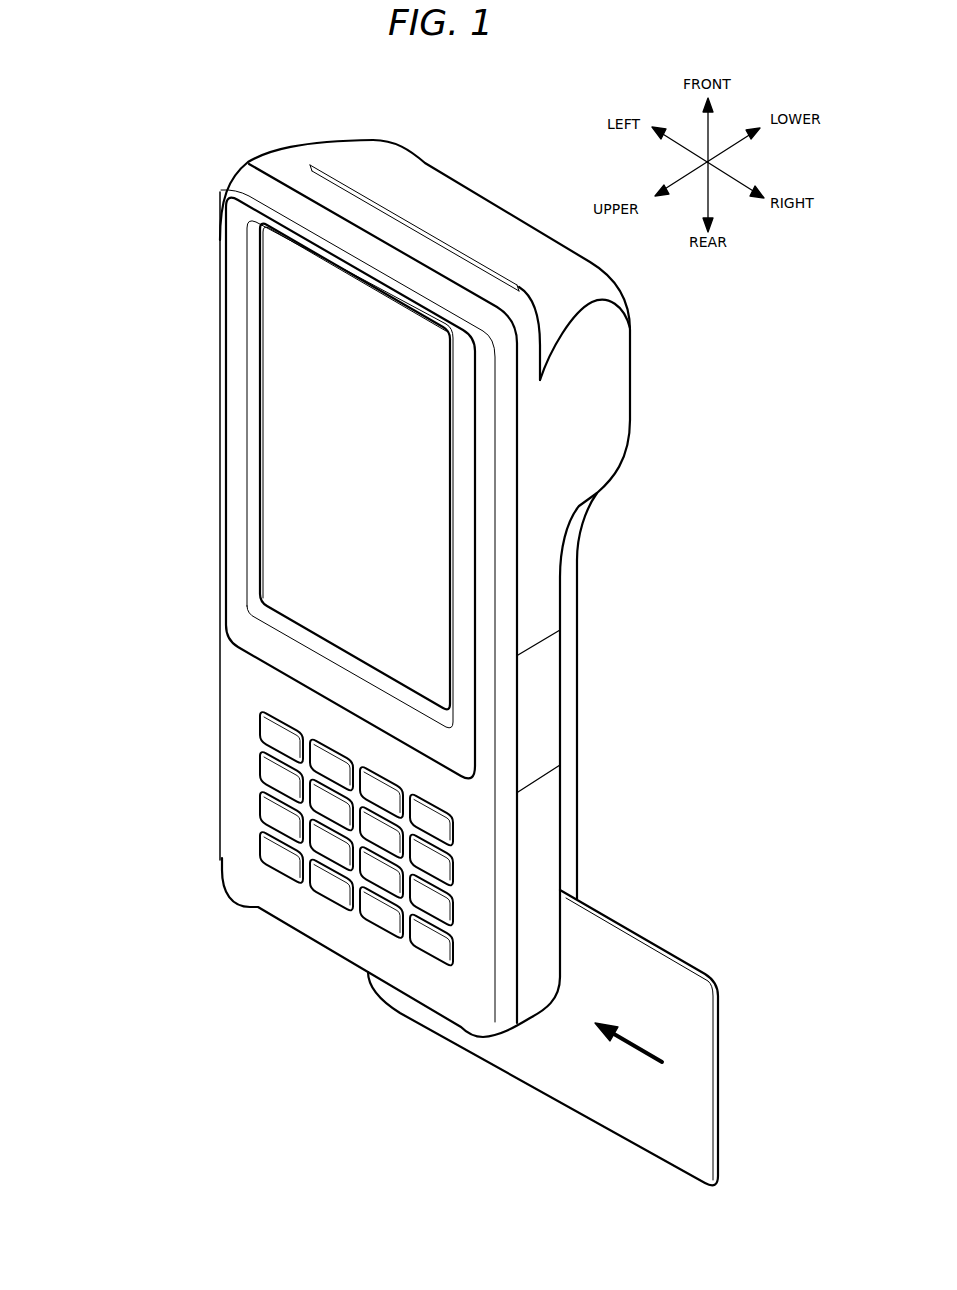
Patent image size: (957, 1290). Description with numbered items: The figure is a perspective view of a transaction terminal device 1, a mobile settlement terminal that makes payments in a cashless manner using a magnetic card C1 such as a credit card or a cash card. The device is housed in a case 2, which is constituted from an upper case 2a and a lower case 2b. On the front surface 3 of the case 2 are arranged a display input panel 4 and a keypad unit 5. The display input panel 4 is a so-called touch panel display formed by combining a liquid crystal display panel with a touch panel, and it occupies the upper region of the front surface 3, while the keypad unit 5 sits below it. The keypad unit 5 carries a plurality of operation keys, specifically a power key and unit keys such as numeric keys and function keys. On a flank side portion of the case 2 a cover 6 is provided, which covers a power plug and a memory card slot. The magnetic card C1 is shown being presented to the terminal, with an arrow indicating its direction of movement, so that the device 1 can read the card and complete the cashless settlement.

The transaction terminal device 1 is at (498, 171).
The case 2 is at (140, 110).
The upper case 2a is at (238, 182).
The lower case 2b is at (295, 146).
The front surface 3 is at (247, 703).
The display input panel 4 is at (283, 423).
The keypad unit 5 is at (245, 823).
The cover 6 is at (543, 714).
The magnetic card C1 is at (652, 942).